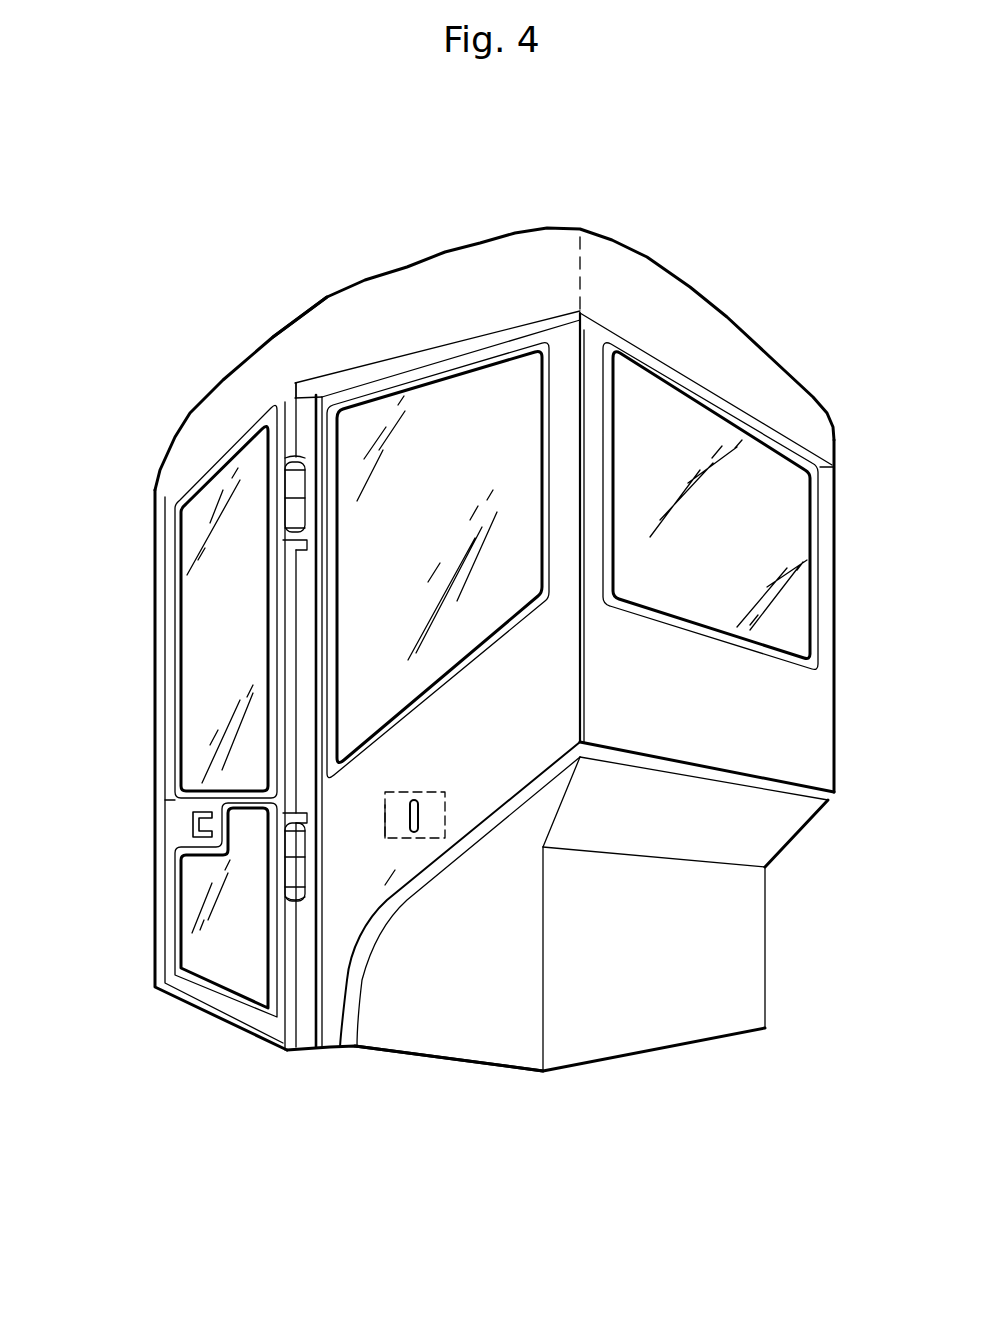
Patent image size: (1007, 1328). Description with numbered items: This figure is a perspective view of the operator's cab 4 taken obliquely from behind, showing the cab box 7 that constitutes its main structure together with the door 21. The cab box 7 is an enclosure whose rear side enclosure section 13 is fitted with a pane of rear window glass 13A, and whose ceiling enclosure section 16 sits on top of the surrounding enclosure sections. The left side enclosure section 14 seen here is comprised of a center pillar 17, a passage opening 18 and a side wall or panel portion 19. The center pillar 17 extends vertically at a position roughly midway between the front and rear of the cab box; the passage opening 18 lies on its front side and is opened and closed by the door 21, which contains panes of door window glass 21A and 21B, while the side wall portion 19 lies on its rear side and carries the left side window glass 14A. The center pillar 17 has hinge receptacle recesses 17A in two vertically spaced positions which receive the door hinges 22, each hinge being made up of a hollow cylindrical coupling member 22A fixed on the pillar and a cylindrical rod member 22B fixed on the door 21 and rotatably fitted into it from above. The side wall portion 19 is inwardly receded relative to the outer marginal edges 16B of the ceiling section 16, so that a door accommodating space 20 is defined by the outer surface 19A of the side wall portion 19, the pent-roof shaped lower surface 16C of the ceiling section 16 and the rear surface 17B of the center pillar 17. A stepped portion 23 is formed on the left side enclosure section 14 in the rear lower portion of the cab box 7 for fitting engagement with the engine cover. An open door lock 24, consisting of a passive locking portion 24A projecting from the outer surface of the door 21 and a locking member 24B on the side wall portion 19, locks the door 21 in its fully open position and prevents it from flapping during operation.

The operator's cab 4 is at (650, 260).
The cab box 7 is at (266, 340).
The rear side enclosure section 13 is at (810, 698).
The rear window glass 13A is at (795, 530).
The left side enclosure section 14 is at (475, 765).
The left side window glass 14A is at (432, 400).
The ceiling enclosure section 16 is at (541, 227).
The outer marginal edges 16B is at (308, 328).
The lower surface 16C is at (394, 360).
The center pillar 17 is at (290, 680).
The hinge receptacle recesses 17A is at (301, 462).
The rear surface 17B is at (307, 620).
The passage opening 18 is at (164, 816).
The side wall portion 19 is at (518, 758).
The outer surface 19A is at (480, 352).
The door accommodating space 20 is at (360, 560).
The door 21 is at (181, 990).
The door window glass 21A is at (205, 667).
The door window glass 21B is at (237, 977).
The door hinges 22 is at (290, 492).
The hollow cylindrical coupling member 22A is at (290, 512).
The cylindrical rod member 22B is at (290, 478).
The stepped portion 23 is at (430, 1027).
The open door lock 24 is at (434, 838).
The passive locking portion 24A is at (192, 826).
The locking member 24B is at (392, 840).